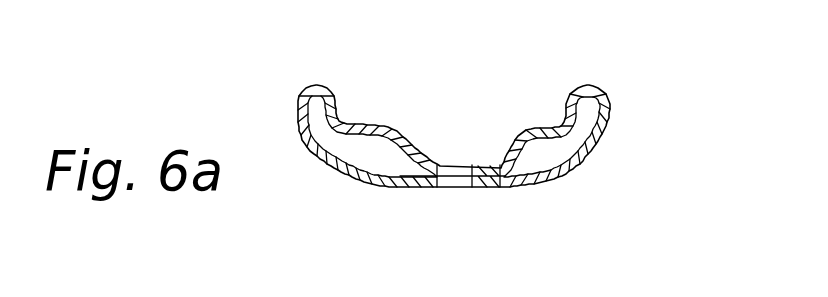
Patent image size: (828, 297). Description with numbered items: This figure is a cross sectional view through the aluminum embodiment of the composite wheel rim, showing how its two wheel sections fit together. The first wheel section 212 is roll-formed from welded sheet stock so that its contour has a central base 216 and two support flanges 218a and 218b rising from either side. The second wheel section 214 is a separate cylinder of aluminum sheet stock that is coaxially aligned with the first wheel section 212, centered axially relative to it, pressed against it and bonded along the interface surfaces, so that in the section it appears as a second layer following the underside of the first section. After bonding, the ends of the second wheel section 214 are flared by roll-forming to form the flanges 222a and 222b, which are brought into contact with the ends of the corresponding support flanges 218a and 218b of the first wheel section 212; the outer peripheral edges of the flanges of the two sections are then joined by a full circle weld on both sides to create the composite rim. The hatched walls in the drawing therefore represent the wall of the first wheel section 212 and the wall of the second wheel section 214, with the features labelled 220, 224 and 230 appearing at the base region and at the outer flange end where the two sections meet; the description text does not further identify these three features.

The first wheel section 212 is at (389, 119).
The second wheel section 214 is at (573, 175).
The base 216 is at (423, 165).
The support flange 218a is at (367, 123).
The support flange 218b is at (558, 127).
The platform rib 220 is at (487, 188).
The flange 222a is at (330, 157).
The flange 222b is at (611, 118).
The hook loop 224 is at (312, 86).
The platform groove 230 is at (452, 187).